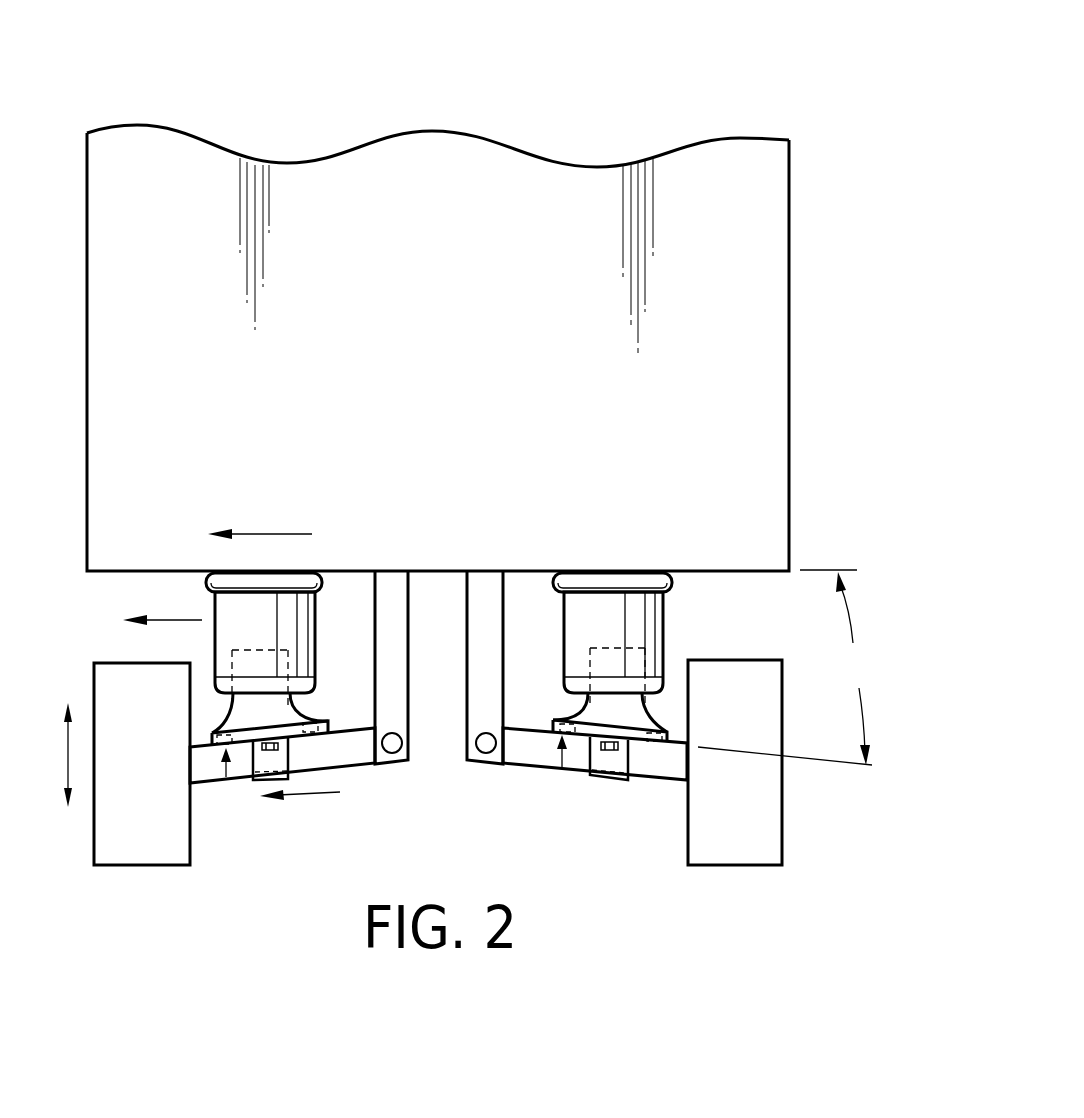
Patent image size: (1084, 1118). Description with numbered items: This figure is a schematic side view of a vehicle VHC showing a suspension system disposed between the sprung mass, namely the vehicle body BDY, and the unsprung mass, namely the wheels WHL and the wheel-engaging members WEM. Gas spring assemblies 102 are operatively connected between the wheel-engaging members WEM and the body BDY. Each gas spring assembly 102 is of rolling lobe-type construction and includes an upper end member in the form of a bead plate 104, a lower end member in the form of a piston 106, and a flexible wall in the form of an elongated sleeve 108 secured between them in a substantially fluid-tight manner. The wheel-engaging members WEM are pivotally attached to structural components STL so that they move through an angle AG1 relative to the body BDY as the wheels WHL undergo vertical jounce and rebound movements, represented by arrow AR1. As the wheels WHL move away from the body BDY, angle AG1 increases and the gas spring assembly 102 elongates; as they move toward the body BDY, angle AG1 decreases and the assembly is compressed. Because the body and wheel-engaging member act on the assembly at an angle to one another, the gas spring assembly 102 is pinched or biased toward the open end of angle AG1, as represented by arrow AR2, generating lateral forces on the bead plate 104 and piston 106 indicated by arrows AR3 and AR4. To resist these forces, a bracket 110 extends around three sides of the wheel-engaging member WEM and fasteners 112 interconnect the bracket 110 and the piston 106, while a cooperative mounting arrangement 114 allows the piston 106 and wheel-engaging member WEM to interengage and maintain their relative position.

The gas spring assembly 102 is at (496, 631).
The bead plate 104 is at (300, 578).
The piston 106 is at (288, 710).
The elongated sleeve 108 is at (300, 632).
The bracket 110 is at (628, 758).
The fastener 112 is at (608, 752).
The cooperative mounting arrangement 114 is at (226, 778).
The vehicle VHC is at (622, 92).
The vehicle body BDY is at (432, 132).
The structural component STL is at (400, 658).
The wheel-engaging member WEM is at (520, 767).
The wheel WHL is at (730, 865).
The arrow AR1 is at (68, 753).
The arrow AR2 is at (172, 620).
The arrow AR3 is at (263, 534).
The arrow AR4 is at (312, 794).
The angle AG1 is at (790, 667).